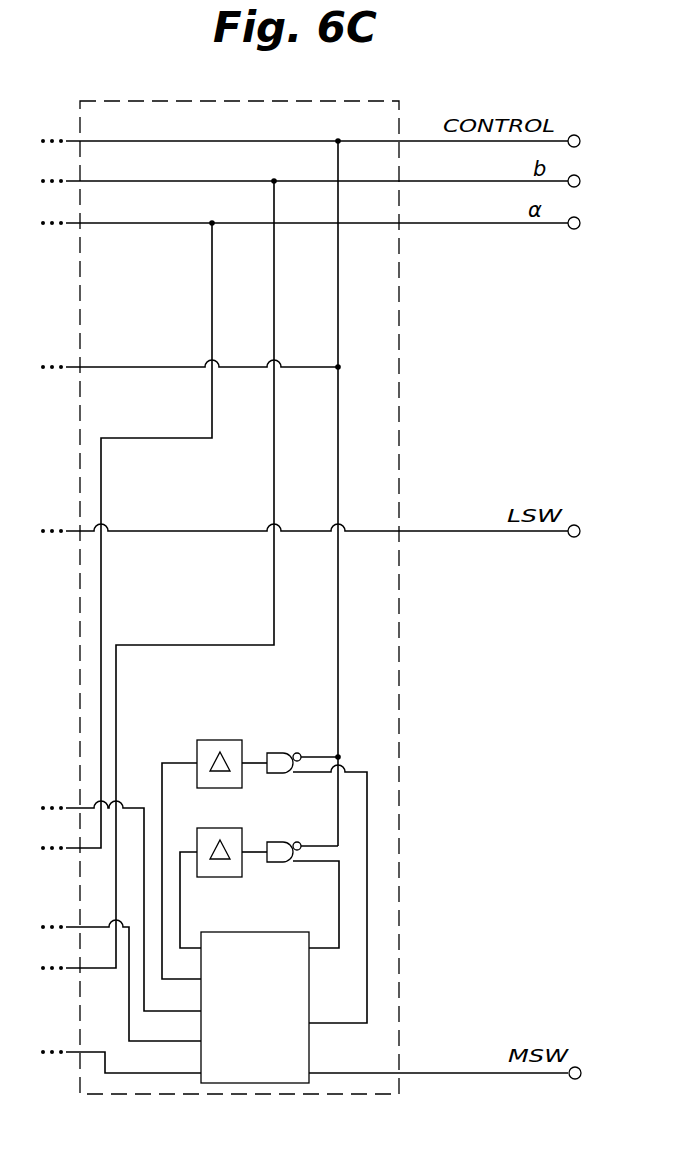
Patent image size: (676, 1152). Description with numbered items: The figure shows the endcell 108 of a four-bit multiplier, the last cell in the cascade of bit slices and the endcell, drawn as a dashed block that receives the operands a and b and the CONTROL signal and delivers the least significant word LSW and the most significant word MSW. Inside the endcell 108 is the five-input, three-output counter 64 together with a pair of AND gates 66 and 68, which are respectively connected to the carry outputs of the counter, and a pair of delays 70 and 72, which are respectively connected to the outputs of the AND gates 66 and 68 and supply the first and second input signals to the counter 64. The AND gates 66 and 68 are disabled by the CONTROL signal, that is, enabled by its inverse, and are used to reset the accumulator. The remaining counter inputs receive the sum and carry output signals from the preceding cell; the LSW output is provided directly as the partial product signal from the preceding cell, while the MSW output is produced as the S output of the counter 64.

The endcell 108 is at (308, 101).
The delay 72 is at (212, 740).
The delay 70 is at (215, 828).
The AND gate 68 is at (282, 753).
The AND gate 66 is at (285, 842).
The (5,3) counter 64 is at (270, 932).